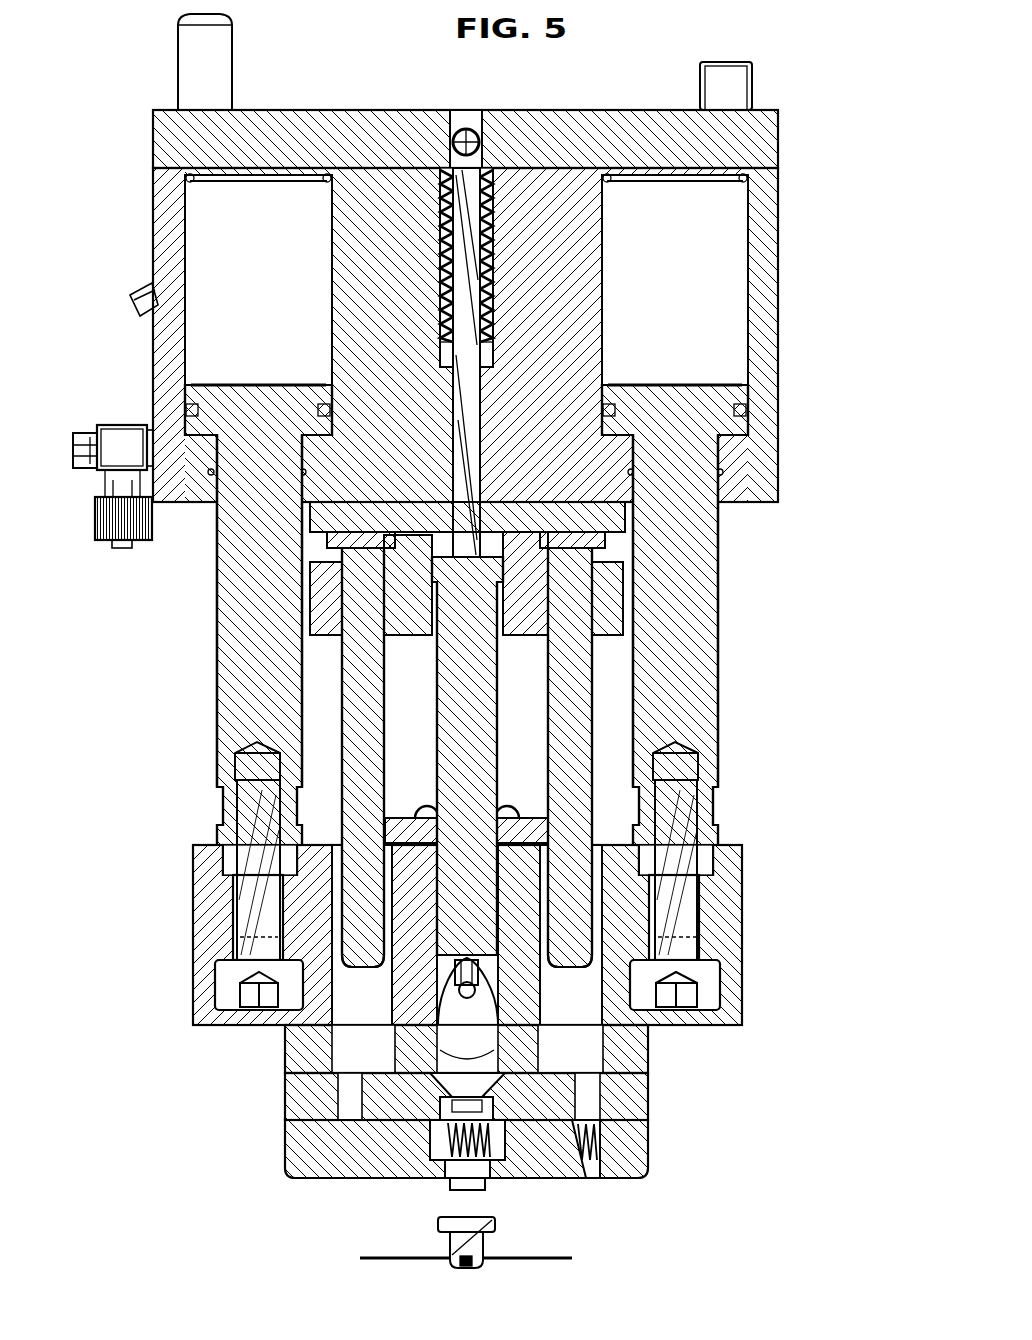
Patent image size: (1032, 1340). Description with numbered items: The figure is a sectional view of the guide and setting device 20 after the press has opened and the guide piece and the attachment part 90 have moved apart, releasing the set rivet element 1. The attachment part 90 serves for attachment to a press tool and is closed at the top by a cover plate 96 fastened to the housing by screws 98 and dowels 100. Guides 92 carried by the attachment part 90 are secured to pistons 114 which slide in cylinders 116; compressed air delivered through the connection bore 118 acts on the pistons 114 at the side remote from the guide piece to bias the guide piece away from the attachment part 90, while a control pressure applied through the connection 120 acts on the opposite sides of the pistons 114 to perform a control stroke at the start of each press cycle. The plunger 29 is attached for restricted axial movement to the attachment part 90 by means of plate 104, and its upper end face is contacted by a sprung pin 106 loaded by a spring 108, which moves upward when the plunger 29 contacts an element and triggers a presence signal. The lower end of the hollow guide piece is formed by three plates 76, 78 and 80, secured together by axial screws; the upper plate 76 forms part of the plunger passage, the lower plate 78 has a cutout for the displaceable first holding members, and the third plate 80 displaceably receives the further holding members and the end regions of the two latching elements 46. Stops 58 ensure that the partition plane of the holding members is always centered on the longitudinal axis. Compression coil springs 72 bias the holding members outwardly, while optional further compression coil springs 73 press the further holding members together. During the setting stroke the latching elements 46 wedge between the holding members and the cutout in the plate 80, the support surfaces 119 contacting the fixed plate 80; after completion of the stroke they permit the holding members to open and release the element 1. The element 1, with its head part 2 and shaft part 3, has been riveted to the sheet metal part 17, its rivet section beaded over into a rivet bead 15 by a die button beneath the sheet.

The rivet element 1 is at (452, 1243).
The head part 2 is at (495, 1225).
The shaft part 3 is at (485, 1245).
The rivet bead 15 is at (462, 1263).
The sheet metal part 17 is at (572, 1258).
The guide and setting device 20 is at (737, 577).
The plunger 29 is at (455, 680).
The latching elements 46 is at (360, 718).
The stops 58 is at (410, 1100).
The compression coil spring 72 is at (452, 1170).
The compression coil springs 73 is at (592, 1135).
The upper plate 76 is at (295, 1050).
The lower plate 78 is at (419, 1144).
The third plate 80 is at (454, 1172).
The attachment part 90 is at (507, 335).
The guides 92 is at (232, 628).
The cover plate 96 is at (345, 128).
The screws 98 is at (700, 85).
The dowels 100 is at (213, 52).
The plate 104 is at (400, 605).
The sprung pin 106 is at (482, 405).
The spring 108 is at (493, 210).
The pistons 114 is at (255, 400).
The cylinders 116 is at (277, 276).
The connection bore 118 is at (376, 945).
The support surface 119 is at (642, 1172).
The connection 120 is at (118, 520).